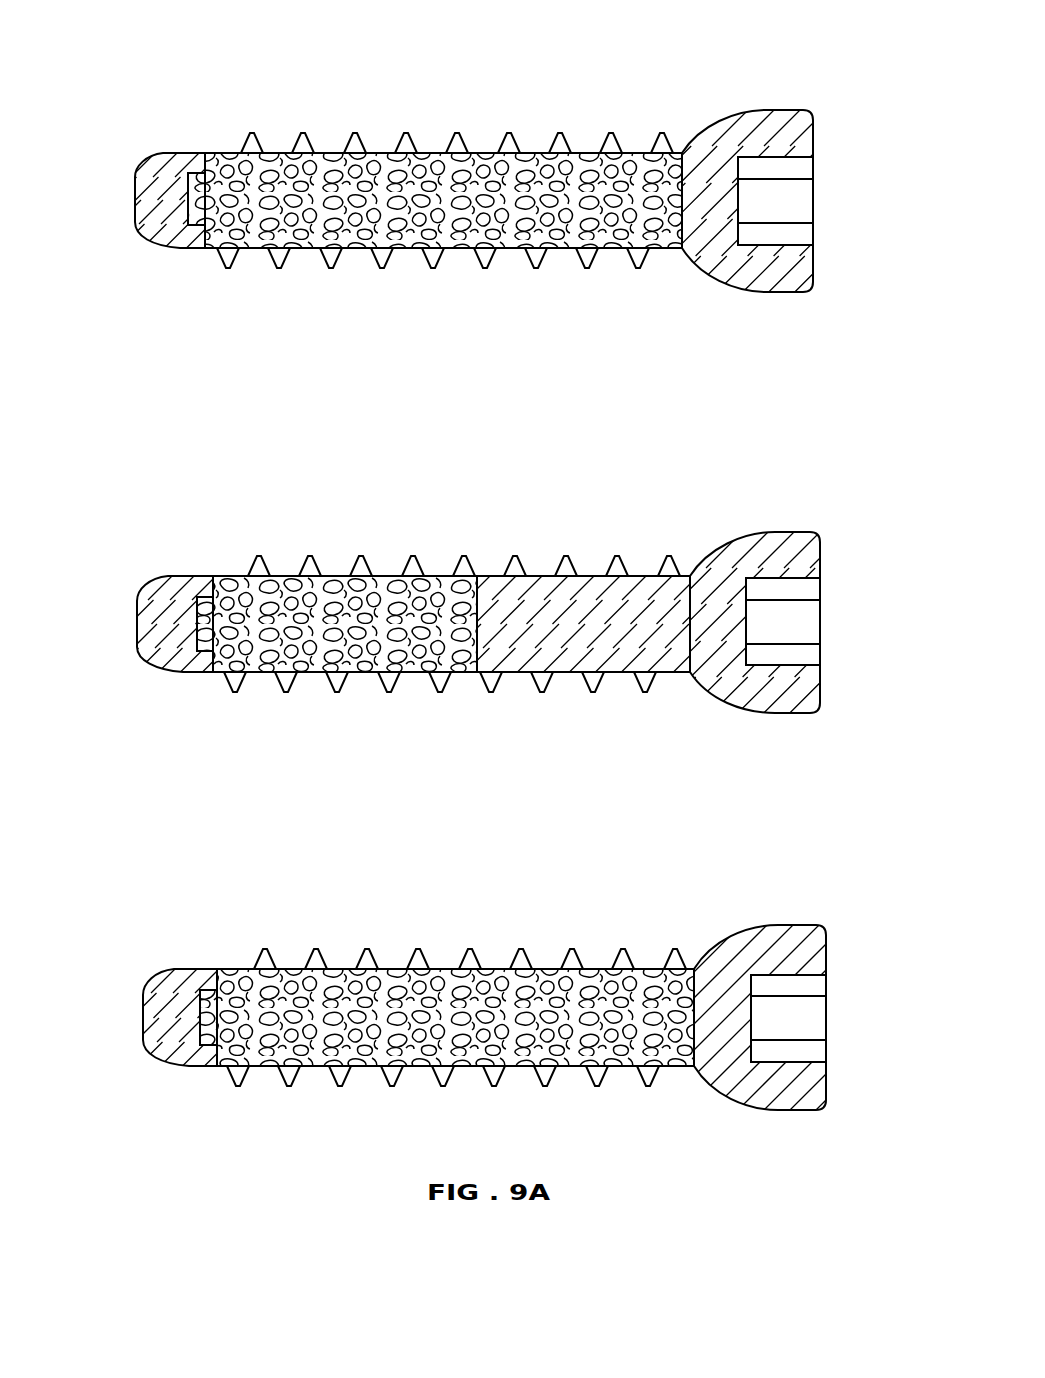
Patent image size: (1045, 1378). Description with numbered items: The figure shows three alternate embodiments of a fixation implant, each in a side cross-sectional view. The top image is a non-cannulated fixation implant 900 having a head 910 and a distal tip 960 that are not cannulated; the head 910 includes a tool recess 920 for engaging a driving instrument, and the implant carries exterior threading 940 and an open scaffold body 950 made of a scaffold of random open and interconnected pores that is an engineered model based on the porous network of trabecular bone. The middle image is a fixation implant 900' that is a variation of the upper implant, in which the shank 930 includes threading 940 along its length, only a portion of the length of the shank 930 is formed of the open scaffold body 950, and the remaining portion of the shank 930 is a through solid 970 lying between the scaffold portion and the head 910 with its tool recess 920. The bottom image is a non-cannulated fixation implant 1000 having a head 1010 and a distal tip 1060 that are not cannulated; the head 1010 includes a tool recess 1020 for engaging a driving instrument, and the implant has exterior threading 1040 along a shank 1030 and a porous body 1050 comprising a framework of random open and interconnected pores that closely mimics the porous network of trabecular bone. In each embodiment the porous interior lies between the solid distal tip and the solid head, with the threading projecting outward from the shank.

The fixation implant 900 is at (435, 157).
The fixation implant 900' is at (436, 572).
The head 910 is at (790, 110).
The tool recess 920 is at (790, 186).
The shank 930 is at (433, 150).
The exterior threading 940 is at (304, 136).
The open scaffold body 950 is at (385, 210).
The distal tip 960 is at (160, 151).
The through solid 970 is at (580, 592).
The fixation implant 1000 is at (194, 875).
The head 1010 is at (790, 925).
The tool recess 1020 is at (793, 1015).
The shaft 1030 is at (490, 967).
The exterior threading 1040 is at (421, 960).
The porous body 1050 is at (395, 1035).
The distal tip 1060 is at (170, 968).